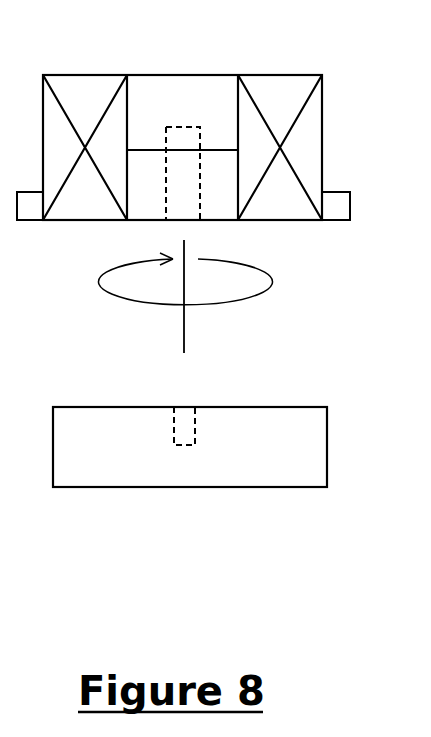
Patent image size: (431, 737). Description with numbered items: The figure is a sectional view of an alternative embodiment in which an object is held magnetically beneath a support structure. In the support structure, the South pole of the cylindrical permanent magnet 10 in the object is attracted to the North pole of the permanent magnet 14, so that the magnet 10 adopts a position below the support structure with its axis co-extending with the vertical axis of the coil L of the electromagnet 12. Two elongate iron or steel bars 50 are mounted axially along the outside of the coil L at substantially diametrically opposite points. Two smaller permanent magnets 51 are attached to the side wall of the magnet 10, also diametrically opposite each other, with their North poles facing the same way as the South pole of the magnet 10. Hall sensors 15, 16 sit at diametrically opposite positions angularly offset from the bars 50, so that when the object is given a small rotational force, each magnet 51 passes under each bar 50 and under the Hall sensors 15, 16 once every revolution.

The coil L is at (329, 131).
The electromagnet 12 is at (293, 217).
The permanent magnet 14 is at (223, 213).
The elongate iron or steel bars 50 is at (170, 127).
The Hall sensor 15 is at (32, 212).
The Hall sensor 16 is at (337, 212).
The permanent magnet 10 is at (285, 475).
The smaller permanent magnets 51 is at (185, 423).